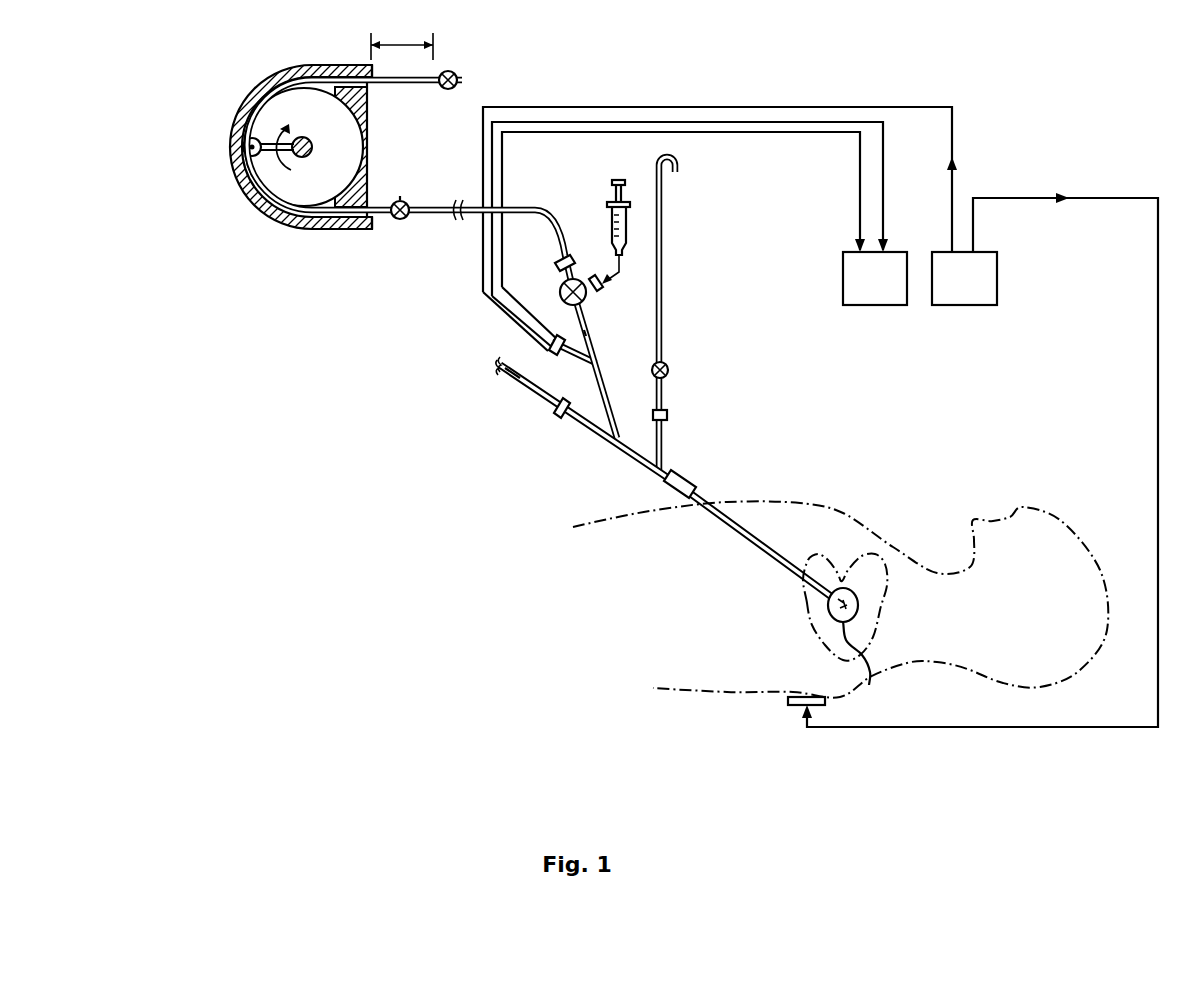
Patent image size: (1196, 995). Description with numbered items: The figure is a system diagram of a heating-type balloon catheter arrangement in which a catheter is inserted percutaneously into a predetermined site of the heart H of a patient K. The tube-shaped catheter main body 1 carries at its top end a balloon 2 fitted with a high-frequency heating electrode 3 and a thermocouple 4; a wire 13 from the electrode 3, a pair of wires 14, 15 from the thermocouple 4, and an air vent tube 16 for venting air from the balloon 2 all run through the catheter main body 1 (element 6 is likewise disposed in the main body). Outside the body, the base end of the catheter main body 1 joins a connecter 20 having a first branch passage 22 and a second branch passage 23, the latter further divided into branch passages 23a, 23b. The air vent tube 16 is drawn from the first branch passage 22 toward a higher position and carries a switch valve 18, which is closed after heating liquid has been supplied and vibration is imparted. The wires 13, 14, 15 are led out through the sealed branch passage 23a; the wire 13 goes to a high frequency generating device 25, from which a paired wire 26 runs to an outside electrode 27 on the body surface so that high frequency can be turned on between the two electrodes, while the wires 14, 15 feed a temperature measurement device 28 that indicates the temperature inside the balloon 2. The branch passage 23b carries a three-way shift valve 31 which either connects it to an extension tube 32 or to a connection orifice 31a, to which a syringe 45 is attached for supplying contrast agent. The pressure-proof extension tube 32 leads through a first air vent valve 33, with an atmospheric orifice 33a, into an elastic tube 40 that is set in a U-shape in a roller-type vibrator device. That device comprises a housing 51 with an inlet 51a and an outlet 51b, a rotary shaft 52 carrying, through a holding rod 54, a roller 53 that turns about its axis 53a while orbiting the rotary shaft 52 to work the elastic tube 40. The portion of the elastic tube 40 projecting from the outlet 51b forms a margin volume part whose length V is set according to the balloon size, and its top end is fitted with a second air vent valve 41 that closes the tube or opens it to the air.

The catheter main body 1 is at (748, 519).
The balloon 2 is at (859, 611).
The high-frequency heating electrode 3 is at (878, 557).
The thermocouple 4 is at (869, 685).
The catheter shaft 6 is at (530, 393).
The wire 13 is at (952, 134).
The wire 14 is at (858, 187).
The wire 15 is at (887, 186).
The air vent tube 16 is at (664, 300).
The switch valve 18 is at (671, 369).
The connecter 20 is at (586, 434).
The first branch passage 22 is at (668, 447).
The second branch passage 23 is at (608, 394).
The branch passage 23a is at (560, 358).
The branch passage 23b is at (594, 336).
The high frequency generating device 25 is at (968, 306).
The wire 26 is at (1158, 359).
The outside electrode 27 is at (800, 708).
The temperature measurement device 28 is at (877, 306).
The shift valve 31 is at (560, 290).
The connection orifice 31a is at (597, 291).
The extension tube 32 is at (537, 207).
The first air vent valve 33 is at (402, 222).
The orifice 33a is at (407, 200).
The elastic tube 40 is at (382, 217).
The second air vent valve 41 is at (455, 72).
The syringe 45 is at (608, 222).
The housing 51 is at (332, 161).
The inlet 51a is at (375, 206).
The outlet 51b is at (373, 87).
The rotary shaft 52 is at (303, 137).
The roller 53 is at (242, 166).
The axis 53a is at (242, 148).
The holding rod 54 is at (293, 139).
The length of margin volume part V is at (402, 41).
The patient K is at (853, 518).
The heart H is at (805, 604).